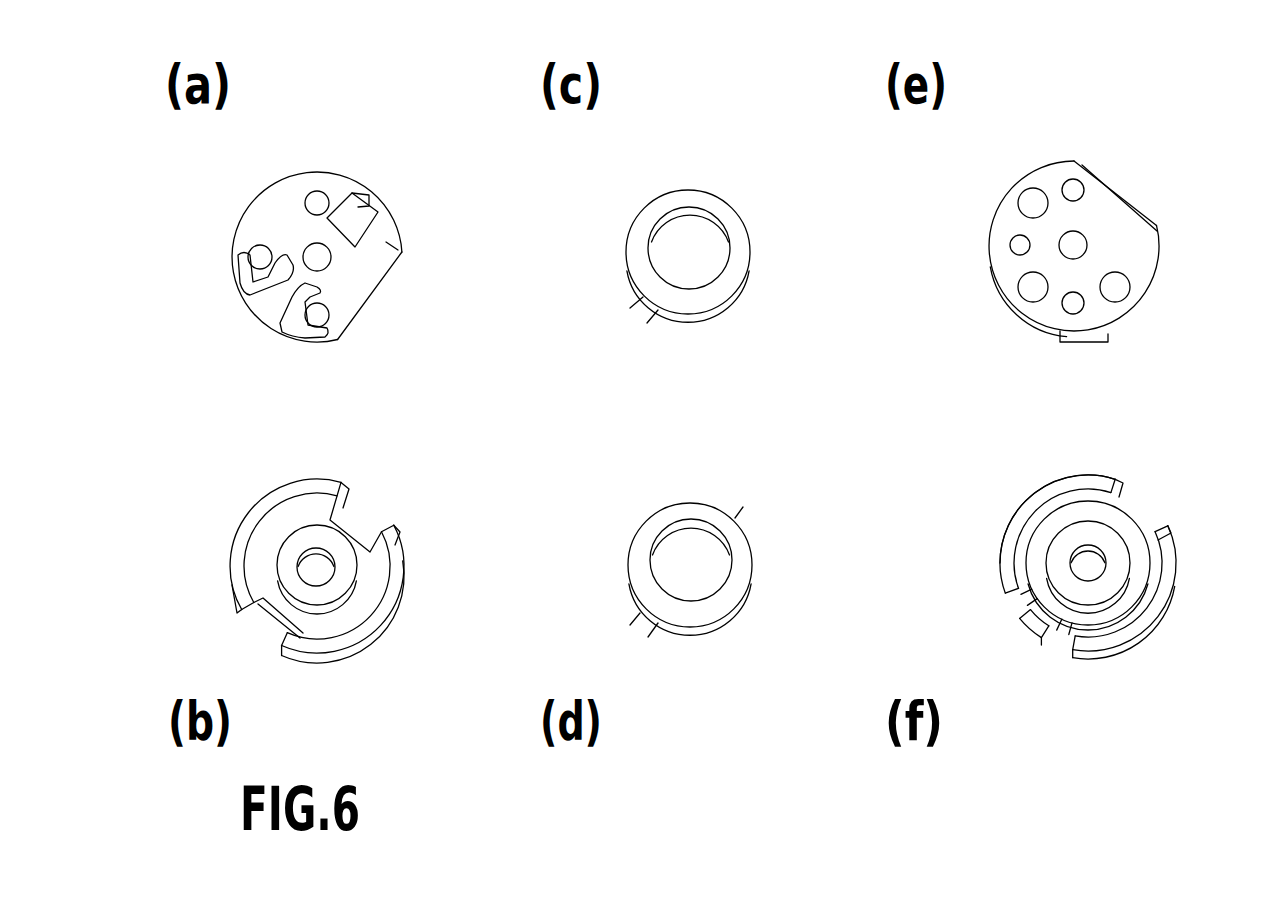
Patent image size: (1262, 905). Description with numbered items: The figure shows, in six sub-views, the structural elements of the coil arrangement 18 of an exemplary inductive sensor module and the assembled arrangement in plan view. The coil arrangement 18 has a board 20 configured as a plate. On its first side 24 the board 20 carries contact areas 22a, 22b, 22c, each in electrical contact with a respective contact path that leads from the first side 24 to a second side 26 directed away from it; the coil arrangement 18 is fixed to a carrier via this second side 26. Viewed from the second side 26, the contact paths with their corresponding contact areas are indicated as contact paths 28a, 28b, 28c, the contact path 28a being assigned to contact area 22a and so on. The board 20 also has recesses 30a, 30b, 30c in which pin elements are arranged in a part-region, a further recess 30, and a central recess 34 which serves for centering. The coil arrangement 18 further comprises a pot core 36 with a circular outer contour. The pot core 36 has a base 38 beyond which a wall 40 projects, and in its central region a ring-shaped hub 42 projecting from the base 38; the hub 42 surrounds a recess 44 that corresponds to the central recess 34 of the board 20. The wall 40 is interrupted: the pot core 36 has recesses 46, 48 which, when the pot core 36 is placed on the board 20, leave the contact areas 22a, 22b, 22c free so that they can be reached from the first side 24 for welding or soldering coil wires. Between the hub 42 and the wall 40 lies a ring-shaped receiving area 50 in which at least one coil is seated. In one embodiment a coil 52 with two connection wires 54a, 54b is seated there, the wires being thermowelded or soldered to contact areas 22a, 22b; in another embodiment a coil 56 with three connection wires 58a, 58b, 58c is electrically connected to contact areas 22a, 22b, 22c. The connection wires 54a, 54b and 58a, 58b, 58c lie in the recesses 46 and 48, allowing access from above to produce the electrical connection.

The coil arrangement 18 is at (1200, 180).
The board 20 is at (385, 245).
The contact area 22a is at (247, 283).
The contact area 22b is at (298, 322).
The contact area 22c is at (358, 207).
The first side 24 is at (258, 222).
The second side 26 is at (370, 298).
The contact path 28a is at (1033, 288).
The contact path 28b is at (1035, 200).
The contact path 28c is at (1118, 290).
The bottom rim 30 is at (1033, 330).
The recess 30a is at (1073, 188).
The recess 30b is at (1025, 247).
The recess 30c is at (1075, 305).
The central recess 34 is at (302, 250).
The pot core 36 is at (403, 595).
The base 38 is at (358, 605).
The wall 40 is at (228, 545).
The ring-shaped hub 42 is at (347, 565).
The recess 44 is at (297, 567).
The recess 46 is at (265, 623).
The recess 48 is at (358, 532).
The receiving area 50 is at (320, 623).
The coil 52 is at (737, 252).
The connection wire 54a is at (636, 302).
The connection wire 54b is at (653, 316).
The coil 56 is at (738, 585).
The connection wire 58a is at (635, 619).
The connection wire 58b is at (653, 630).
The connection wire 58c is at (738, 513).